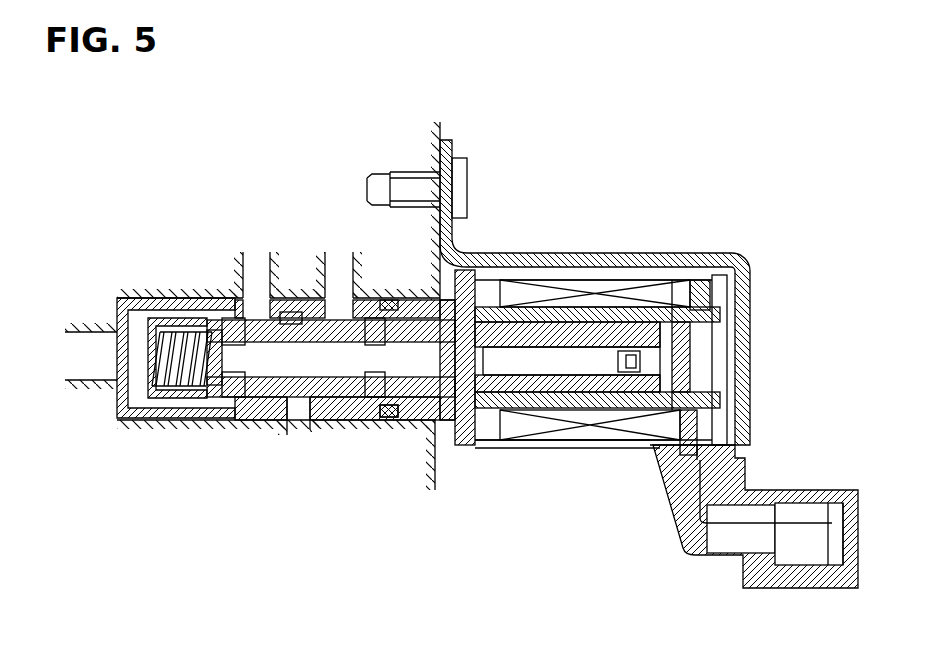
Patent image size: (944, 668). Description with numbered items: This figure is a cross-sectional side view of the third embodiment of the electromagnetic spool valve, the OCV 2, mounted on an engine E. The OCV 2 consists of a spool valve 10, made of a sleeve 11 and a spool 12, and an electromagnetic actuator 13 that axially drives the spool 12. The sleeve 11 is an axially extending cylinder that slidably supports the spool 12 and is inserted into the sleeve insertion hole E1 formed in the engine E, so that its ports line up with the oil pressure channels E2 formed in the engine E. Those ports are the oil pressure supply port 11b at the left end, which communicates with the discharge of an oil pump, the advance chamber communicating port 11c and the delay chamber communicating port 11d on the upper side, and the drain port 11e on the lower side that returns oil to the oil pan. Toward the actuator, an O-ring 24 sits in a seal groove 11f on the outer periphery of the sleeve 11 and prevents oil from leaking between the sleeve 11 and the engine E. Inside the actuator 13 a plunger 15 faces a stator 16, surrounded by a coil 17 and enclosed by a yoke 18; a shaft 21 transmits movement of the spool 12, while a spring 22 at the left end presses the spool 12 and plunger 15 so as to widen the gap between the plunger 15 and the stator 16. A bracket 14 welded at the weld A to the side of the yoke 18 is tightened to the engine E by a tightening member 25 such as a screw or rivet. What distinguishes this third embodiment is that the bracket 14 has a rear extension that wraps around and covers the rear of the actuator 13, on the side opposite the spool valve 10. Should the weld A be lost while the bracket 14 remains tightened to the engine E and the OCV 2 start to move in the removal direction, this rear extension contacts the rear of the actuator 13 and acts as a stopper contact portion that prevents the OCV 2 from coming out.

The OCV 2 is at (600, 510).
The spool valve 10 is at (162, 411).
The sleeve 11 is at (222, 305).
The oil pressure supply port 11b is at (135, 350).
The advance chamber communicating port 11c is at (372, 312).
The delay chamber communicating port 11d is at (278, 312).
The drain port 11e is at (300, 418).
The seal groove 11f is at (390, 418).
The spool 12 is at (162, 325).
The electromagnetic actuator 13 is at (703, 252).
The bracket 14 is at (552, 255).
The plunger 15 is at (690, 330).
The stator 16 is at (470, 256).
The coil 17 is at (628, 450).
The yoke 18 is at (657, 270).
The shaft 21 is at (543, 382).
The spring 22 is at (137, 306).
The O-ring 24 is at (447, 438).
The tightening member 25 is at (465, 180).
The weld A is at (582, 268).
The engine E is at (445, 127).
The sleeve insertion hole E1 is at (215, 420).
The oil passage E2 is at (258, 290).